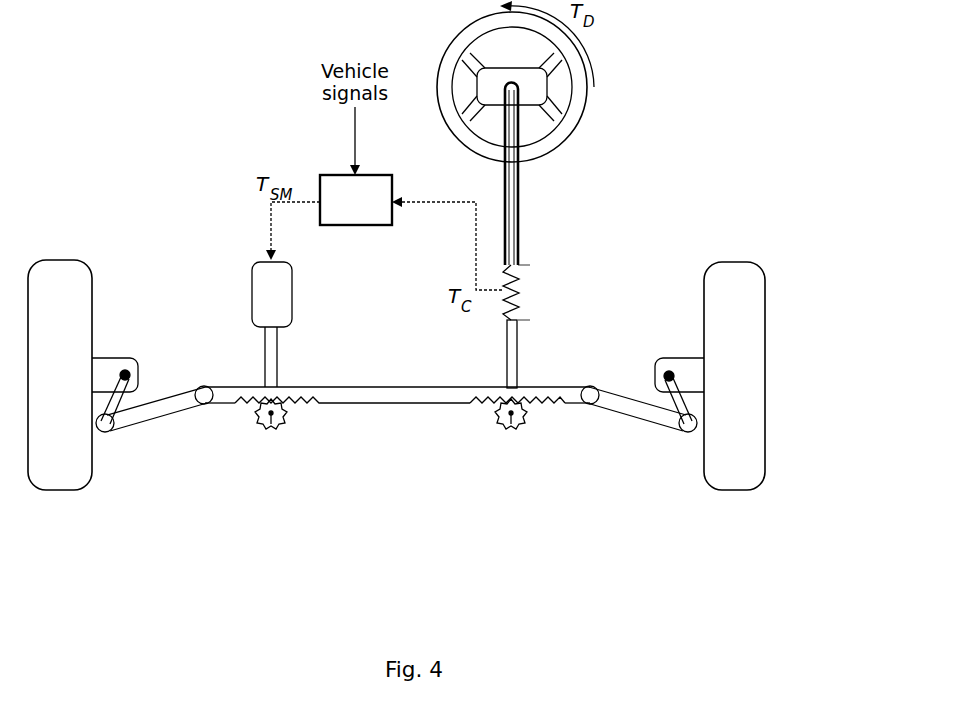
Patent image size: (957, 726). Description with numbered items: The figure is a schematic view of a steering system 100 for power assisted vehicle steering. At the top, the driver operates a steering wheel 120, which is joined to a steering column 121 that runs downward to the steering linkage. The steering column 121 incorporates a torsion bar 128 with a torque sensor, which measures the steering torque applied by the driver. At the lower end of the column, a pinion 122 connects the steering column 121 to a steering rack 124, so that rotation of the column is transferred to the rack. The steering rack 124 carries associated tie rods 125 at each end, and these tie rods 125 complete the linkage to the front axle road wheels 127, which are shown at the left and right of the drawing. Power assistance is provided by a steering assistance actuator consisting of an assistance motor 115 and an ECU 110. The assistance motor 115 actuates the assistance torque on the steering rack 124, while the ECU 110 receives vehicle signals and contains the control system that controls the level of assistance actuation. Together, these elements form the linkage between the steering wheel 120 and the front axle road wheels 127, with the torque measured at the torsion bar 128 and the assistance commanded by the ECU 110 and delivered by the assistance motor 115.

The steering system 100 is at (130, 164).
The ECU 110 is at (340, 226).
The assistance motor 115 is at (278, 275).
The steering wheel 120 is at (582, 112).
The steering column 121 is at (519, 195).
The pinion 122 is at (272, 427).
The steering rack 124 is at (233, 395).
The tie rods 125 is at (173, 393).
The front axle road wheels 127 is at (45, 472).
The torsion bar 128 is at (522, 285).